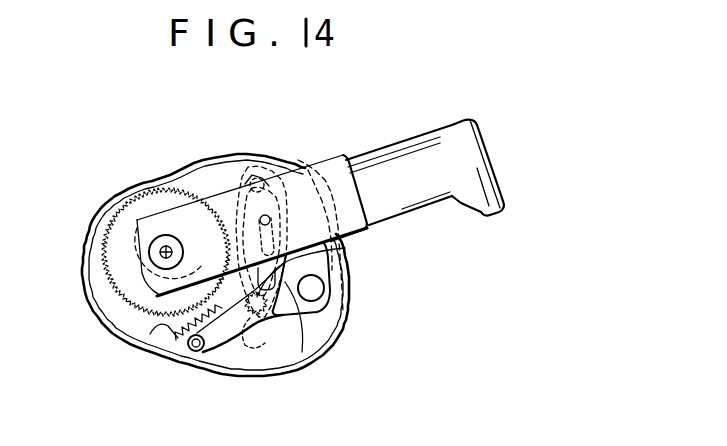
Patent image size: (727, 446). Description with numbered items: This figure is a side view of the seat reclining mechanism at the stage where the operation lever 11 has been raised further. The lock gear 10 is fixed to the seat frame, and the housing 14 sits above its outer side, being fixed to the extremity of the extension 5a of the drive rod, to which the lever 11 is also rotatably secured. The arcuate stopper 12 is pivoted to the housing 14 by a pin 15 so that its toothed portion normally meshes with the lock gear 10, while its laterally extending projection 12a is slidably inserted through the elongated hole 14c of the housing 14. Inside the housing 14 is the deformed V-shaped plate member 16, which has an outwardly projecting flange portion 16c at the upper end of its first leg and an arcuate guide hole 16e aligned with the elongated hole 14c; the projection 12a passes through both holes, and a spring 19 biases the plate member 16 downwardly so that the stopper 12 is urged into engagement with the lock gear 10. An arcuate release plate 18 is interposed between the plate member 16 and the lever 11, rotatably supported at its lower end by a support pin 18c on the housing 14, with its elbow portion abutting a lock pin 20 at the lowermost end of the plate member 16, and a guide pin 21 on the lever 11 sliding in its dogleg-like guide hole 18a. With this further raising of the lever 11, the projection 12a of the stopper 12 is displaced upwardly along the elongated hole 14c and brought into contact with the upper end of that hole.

The housing 14 is at (131, 188).
The operation lever 11 is at (403, 167).
The deformed V-shaped plate member 16 is at (325, 297).
The extension of the drive rod 5a is at (149, 252).
The lock gear 10 is at (113, 270).
The stopper 12 is at (254, 167).
The pin 15 is at (278, 162).
The guide pin 21 is at (270, 221).
The outwardly projecting flange portion 16c is at (242, 203).
The release plate 18 is at (217, 340).
The support pin 18c is at (189, 350).
The spring 19 is at (152, 334).
The elongated hole 14c is at (247, 347).
The lock pin 20 is at (313, 285).
The dogleg-like guide hole 18a is at (345, 248).
The arcuate guide hole 16e is at (330, 337).
The projection 12a is at (292, 340).